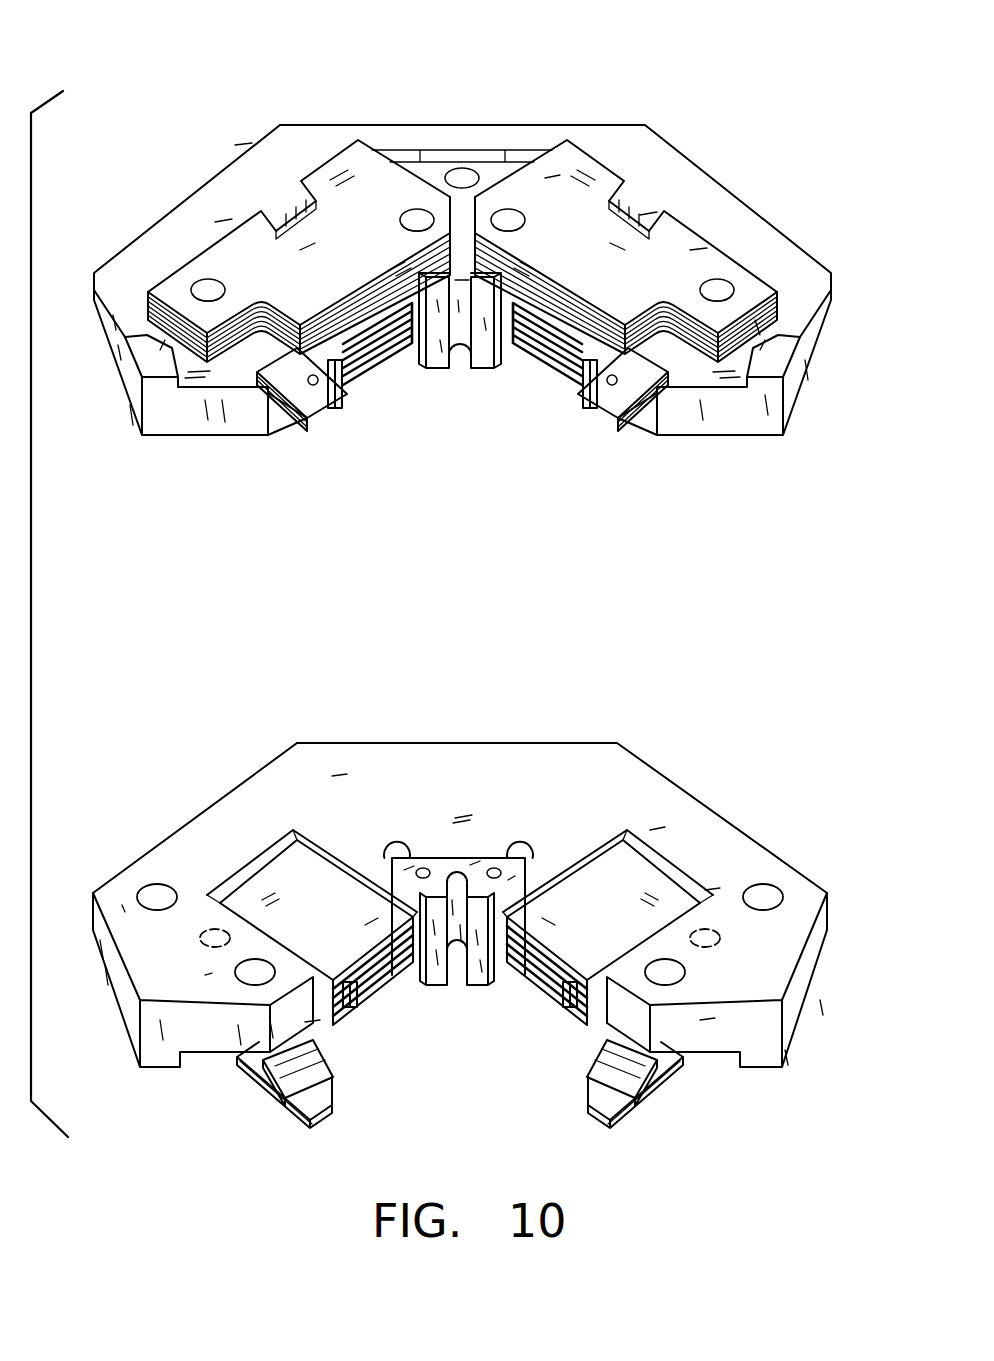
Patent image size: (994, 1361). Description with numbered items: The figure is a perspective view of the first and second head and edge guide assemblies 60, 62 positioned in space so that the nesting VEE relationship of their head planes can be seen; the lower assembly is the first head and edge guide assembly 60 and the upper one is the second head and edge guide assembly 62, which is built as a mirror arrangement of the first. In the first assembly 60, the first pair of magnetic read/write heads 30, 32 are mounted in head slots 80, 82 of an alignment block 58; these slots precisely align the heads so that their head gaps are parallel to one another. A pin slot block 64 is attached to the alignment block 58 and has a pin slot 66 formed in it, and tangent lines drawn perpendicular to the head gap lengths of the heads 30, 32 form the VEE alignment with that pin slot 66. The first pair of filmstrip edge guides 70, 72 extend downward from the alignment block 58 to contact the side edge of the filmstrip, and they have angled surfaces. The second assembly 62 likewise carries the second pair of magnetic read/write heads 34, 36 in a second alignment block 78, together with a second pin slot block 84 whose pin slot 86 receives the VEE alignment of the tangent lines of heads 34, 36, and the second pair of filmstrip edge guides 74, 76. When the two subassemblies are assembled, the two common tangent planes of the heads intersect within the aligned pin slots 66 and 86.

The magnetic read/write head 30 is at (337, 1022).
The magnetic read/write head 32 is at (577, 1020).
The magnetic read/write head 34 is at (397, 402).
The magnetic read/write head 36 is at (518, 402).
The alignment block 58 is at (753, 1068).
The first head and edge guide assembly 60 is at (768, 718).
The second head and edge guide assembly 62 is at (775, 73).
The pin slot block 64 is at (446, 987).
The pin slot 66 is at (462, 968).
The filmstrip edge guide 70 is at (292, 1106).
The filmstrip edge guide 72 is at (620, 1106).
The filmstrip edge guide 74 is at (310, 422).
The filmstrip edge guide 76 is at (606, 422).
The second alignment block 78 is at (753, 437).
The head slot 80 is at (228, 882).
The head slot 82 is at (692, 882).
The second pin slot block 84 is at (437, 370).
The pin slot 86 is at (462, 355).